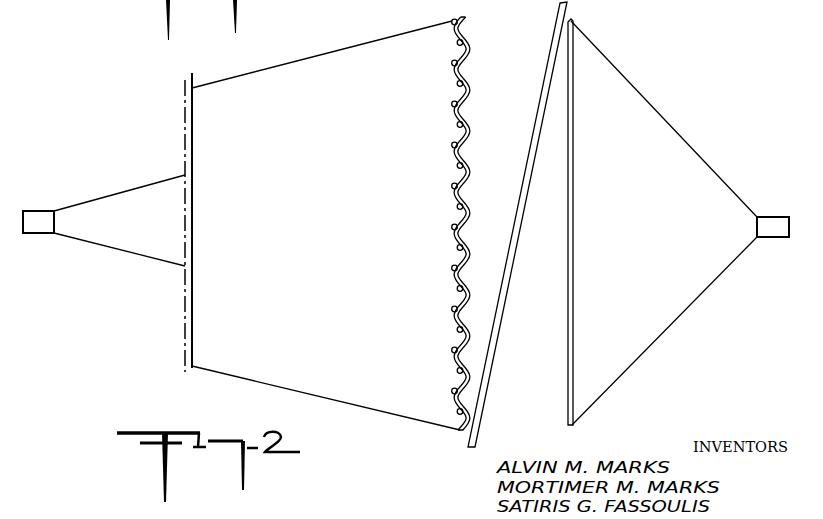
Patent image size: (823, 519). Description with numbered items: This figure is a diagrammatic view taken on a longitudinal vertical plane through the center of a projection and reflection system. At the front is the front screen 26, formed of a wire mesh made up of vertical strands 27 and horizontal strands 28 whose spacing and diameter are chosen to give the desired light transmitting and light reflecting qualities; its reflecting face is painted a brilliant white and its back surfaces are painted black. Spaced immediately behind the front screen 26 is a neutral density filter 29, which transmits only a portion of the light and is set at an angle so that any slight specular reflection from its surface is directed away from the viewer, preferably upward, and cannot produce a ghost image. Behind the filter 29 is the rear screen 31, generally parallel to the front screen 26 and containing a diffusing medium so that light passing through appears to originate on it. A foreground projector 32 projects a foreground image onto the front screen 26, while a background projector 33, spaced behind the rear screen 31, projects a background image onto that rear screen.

The front screen 26 is at (341, 223).
The vertical strands 27 is at (466, 185).
The horizontal strands 28 is at (452, 182).
The neutral density filter 29 is at (512, 257).
The rear screen 31 is at (574, 258).
The foreground projector 32 is at (33, 227).
The background projector 33 is at (764, 230).